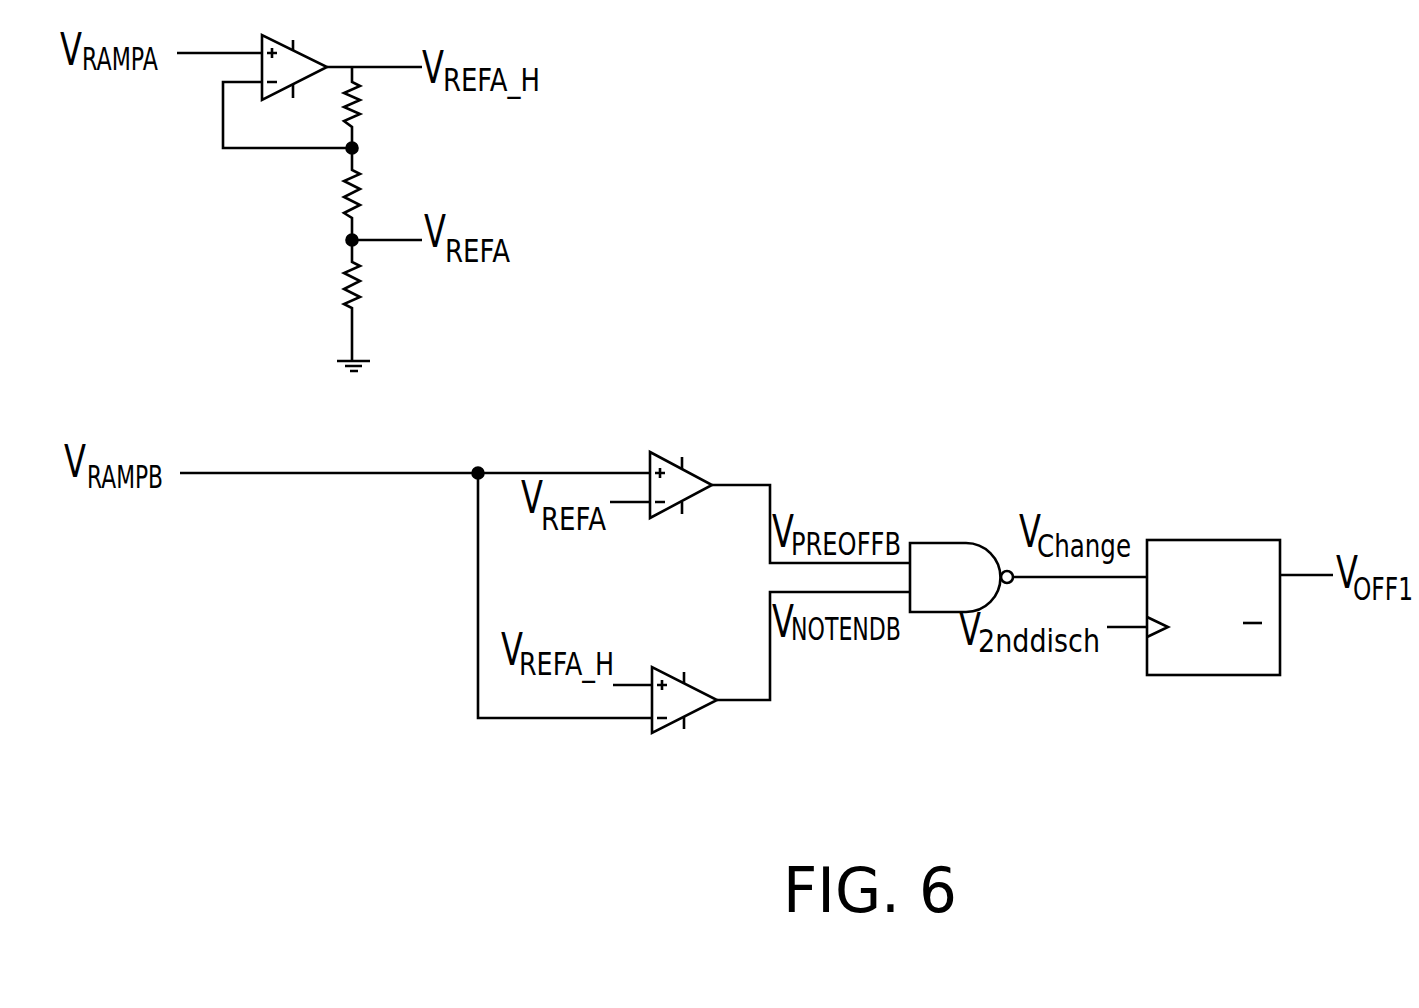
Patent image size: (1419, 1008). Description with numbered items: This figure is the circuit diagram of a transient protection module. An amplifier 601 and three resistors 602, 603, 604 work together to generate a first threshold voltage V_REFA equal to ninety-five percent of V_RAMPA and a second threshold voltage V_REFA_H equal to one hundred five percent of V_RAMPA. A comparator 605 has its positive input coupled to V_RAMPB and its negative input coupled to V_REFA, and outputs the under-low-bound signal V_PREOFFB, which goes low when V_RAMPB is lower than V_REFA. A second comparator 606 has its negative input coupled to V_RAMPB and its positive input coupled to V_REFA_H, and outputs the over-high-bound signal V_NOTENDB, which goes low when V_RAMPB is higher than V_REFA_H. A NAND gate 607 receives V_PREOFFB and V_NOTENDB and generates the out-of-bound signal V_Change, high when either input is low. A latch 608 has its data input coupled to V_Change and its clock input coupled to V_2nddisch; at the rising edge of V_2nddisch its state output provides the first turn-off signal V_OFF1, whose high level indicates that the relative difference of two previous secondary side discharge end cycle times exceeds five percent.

The amplifier 601 is at (276, 93).
The resistor 602 is at (366, 108).
The resistor 603 is at (335, 198).
The resistor 604 is at (372, 287).
The comparator 605 is at (693, 468).
The comparator 606 is at (698, 709).
The NAND gate 607 is at (940, 543).
The latch 608 is at (1222, 540).